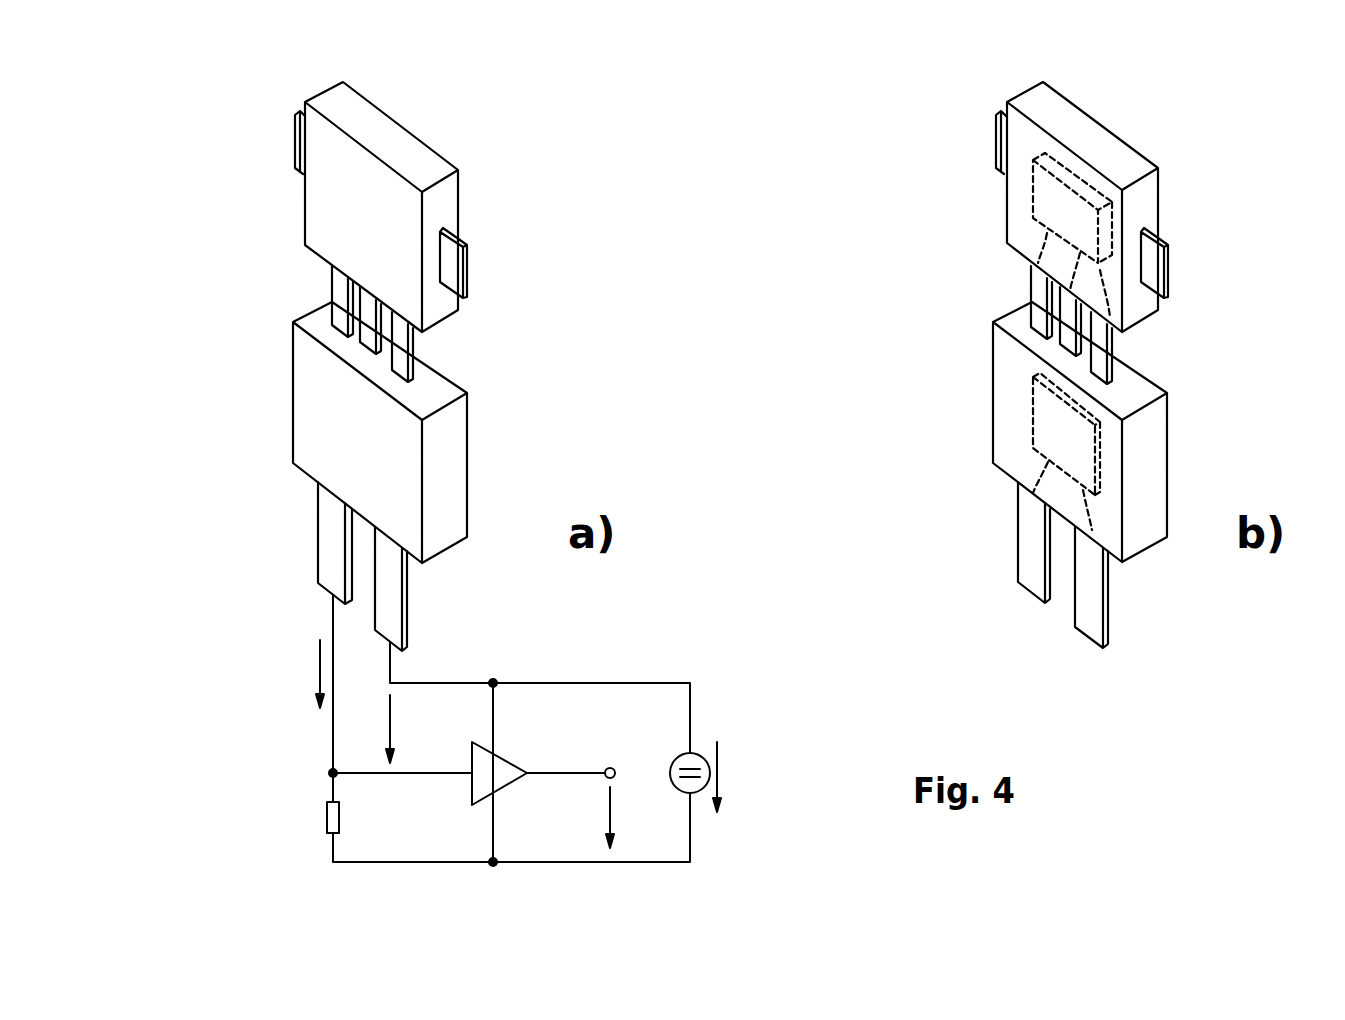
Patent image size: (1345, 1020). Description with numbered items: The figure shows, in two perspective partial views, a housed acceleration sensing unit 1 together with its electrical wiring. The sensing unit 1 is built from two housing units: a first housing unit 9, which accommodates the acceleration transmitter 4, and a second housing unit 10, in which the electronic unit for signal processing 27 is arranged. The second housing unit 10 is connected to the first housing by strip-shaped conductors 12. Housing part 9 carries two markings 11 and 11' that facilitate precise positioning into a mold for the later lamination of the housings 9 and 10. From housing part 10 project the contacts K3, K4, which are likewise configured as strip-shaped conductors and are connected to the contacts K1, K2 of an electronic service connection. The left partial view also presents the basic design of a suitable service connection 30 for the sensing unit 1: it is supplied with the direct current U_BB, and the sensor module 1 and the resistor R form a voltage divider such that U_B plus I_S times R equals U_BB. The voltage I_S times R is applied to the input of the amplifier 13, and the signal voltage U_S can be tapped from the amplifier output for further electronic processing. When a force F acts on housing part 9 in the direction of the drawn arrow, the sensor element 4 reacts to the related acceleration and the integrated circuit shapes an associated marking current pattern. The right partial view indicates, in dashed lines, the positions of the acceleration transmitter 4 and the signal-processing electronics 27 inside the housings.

The acceleration sensing unit 1 is at (508, 192).
The acceleration transmitter 4 is at (1052, 198).
The first housing unit 9 is at (410, 153).
The second housing unit 10 is at (320, 435).
The marking 11 is at (601, 142).
The marking 11' is at (804, 263).
The strip-shaped conductors 12 is at (404, 376).
The amplifier 13 is at (493, 771).
The electronic unit for signal processing 27 is at (1050, 428).
The service connection 30 is at (305, 873).
The contact K1 is at (495, 682).
The contact K2 is at (333, 773).
The contact K3 is at (387, 587).
The contact K4 is at (337, 548).